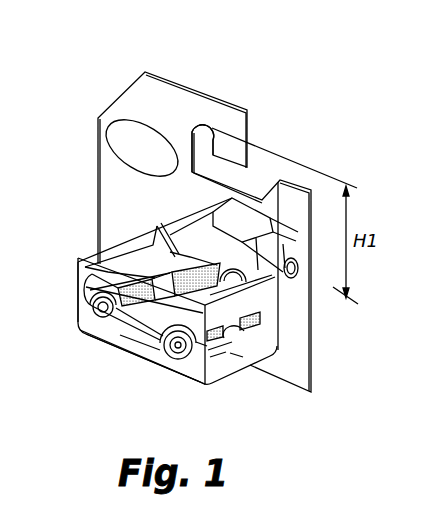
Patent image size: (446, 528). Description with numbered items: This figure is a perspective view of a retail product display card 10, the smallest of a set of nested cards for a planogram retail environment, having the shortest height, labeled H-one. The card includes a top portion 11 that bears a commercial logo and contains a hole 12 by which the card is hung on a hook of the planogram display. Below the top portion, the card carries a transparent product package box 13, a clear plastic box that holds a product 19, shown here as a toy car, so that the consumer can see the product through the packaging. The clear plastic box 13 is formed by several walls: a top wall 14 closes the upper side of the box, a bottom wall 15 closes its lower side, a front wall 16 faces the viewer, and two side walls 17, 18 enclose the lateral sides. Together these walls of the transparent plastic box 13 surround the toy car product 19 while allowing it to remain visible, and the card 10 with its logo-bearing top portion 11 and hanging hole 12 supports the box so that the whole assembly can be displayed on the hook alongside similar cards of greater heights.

The product display card 10 is at (323, 118).
The top portion of card 11 is at (97, 166).
The hole 12 is at (187, 128).
The transparent product package box 13 is at (74, 250).
The top wall of plastic box 14 is at (132, 243).
The bottom wall of plastic box 15 is at (110, 342).
The front wall of transparent plastic box 16 is at (147, 352).
The side wall of plastic box 17 is at (77, 283).
The side wall of plastic box 18 is at (222, 358).
The product 19 is at (133, 310).